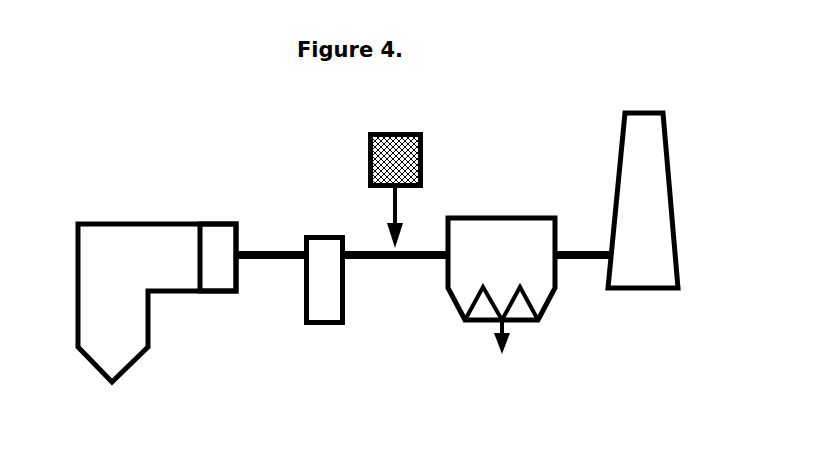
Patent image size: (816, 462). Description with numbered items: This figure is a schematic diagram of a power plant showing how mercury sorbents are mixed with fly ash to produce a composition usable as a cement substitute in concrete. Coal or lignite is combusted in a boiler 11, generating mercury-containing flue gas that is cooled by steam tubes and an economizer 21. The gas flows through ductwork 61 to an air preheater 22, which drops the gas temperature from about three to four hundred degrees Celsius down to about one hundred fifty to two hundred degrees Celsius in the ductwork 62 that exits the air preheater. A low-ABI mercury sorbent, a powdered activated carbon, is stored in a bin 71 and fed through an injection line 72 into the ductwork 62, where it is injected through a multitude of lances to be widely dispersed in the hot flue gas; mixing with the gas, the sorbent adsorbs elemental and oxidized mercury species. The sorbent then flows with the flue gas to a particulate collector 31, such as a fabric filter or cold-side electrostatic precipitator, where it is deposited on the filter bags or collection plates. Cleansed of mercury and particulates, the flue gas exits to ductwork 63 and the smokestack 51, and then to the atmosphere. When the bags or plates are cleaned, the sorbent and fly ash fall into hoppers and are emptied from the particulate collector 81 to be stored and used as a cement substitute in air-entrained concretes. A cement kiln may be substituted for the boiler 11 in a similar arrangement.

The boiler 11 is at (94, 343).
The economizer 21 is at (213, 277).
The air preheater 22 is at (322, 303).
The particulate collector 31 is at (520, 242).
The smokestack 51 is at (625, 272).
The ductwork 61 is at (263, 262).
The ductwork 62 is at (368, 262).
The ductwork 63 is at (570, 262).
The bin 71 is at (373, 133).
The injection line 72 is at (393, 213).
The particulate collector outlet 81 is at (502, 352).